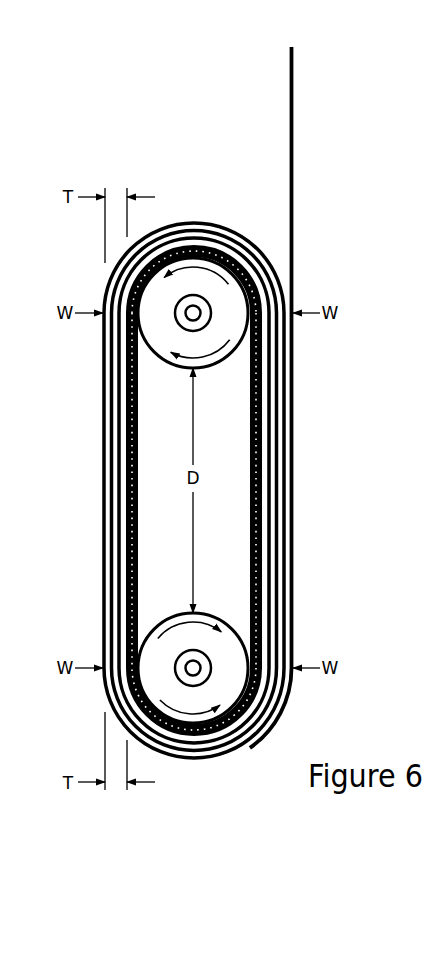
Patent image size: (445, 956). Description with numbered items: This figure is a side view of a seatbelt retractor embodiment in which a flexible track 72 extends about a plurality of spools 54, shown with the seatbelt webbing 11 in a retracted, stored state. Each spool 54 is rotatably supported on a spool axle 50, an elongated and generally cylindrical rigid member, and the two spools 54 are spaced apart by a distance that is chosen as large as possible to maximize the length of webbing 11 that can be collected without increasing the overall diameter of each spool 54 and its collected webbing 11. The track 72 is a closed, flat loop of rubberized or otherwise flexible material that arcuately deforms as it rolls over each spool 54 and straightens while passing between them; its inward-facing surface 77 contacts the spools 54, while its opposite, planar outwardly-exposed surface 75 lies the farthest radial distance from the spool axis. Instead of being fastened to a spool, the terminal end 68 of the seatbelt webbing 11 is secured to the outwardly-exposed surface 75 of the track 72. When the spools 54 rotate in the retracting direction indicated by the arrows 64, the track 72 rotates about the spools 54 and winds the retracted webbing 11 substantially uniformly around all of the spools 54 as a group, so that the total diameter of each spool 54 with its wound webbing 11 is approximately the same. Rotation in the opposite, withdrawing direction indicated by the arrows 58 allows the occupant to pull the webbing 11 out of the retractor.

The seatbelt webbing 11 is at (293, 152).
The spool axle 50 is at (187, 322).
The spool 54 is at (161, 490).
The arrows indicating withdrawing direction 58 is at (208, 262).
The arrows indicating retracting direction 64 is at (181, 360).
The terminal end 68 is at (239, 490).
The flexible track 72 is at (140, 445).
The outwardly-exposed surface 75 is at (260, 657).
The inward-facing surface 77 is at (252, 561).